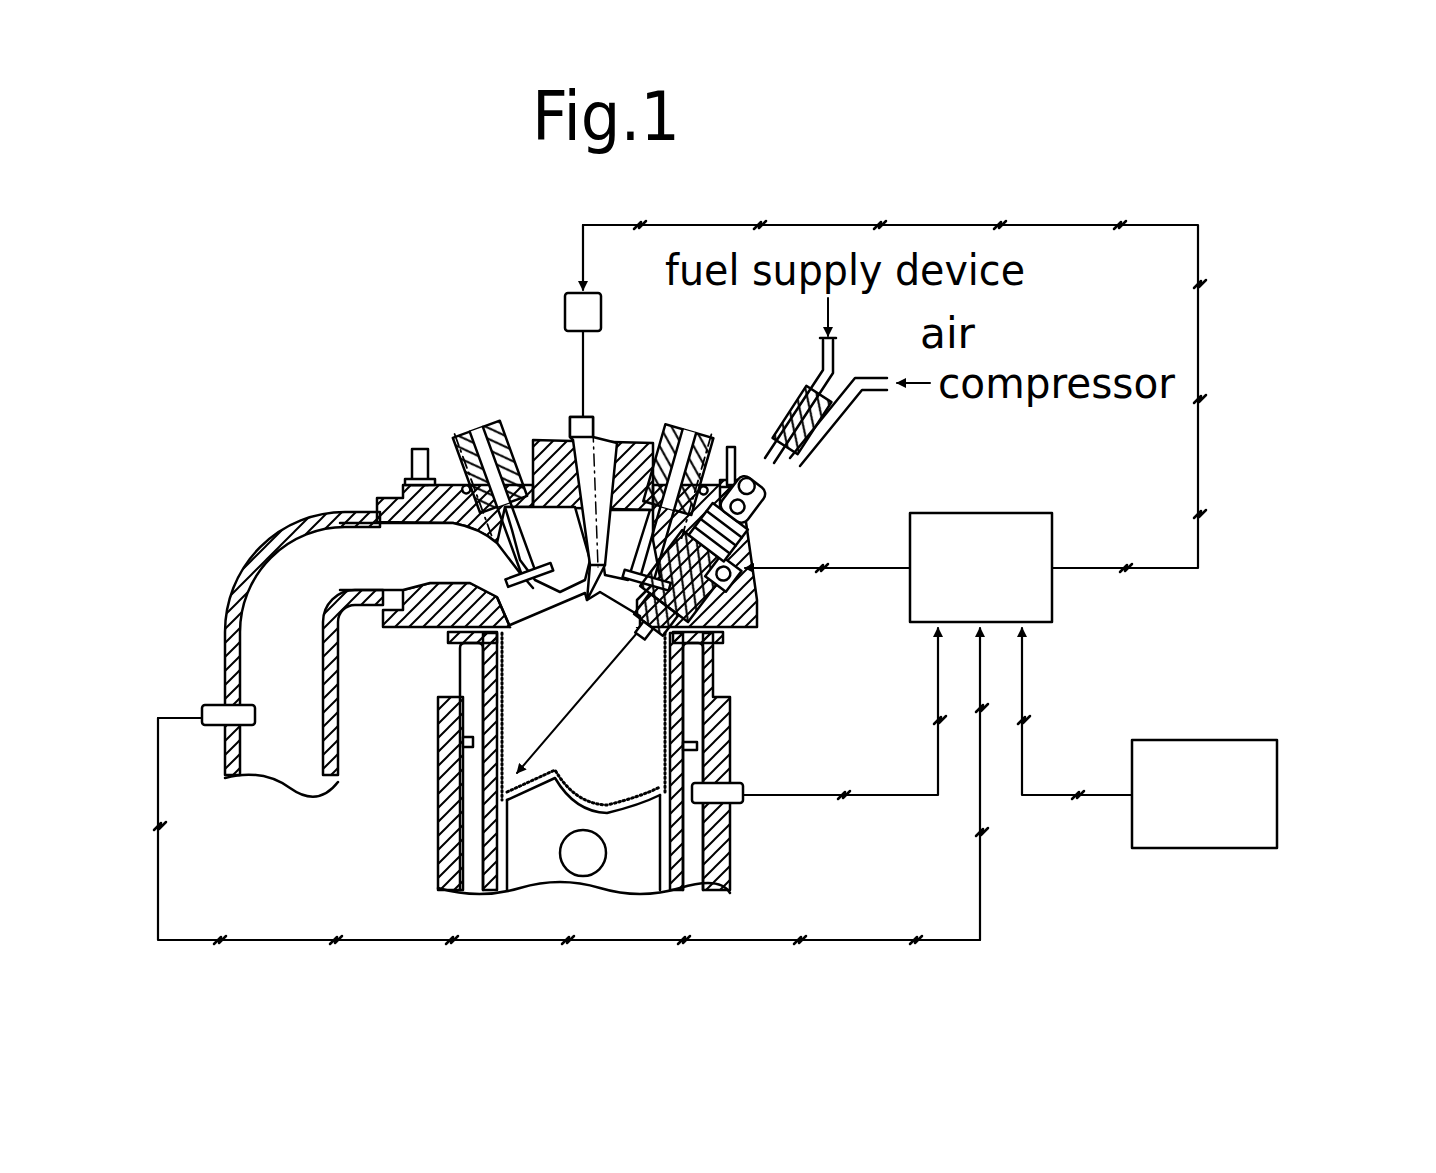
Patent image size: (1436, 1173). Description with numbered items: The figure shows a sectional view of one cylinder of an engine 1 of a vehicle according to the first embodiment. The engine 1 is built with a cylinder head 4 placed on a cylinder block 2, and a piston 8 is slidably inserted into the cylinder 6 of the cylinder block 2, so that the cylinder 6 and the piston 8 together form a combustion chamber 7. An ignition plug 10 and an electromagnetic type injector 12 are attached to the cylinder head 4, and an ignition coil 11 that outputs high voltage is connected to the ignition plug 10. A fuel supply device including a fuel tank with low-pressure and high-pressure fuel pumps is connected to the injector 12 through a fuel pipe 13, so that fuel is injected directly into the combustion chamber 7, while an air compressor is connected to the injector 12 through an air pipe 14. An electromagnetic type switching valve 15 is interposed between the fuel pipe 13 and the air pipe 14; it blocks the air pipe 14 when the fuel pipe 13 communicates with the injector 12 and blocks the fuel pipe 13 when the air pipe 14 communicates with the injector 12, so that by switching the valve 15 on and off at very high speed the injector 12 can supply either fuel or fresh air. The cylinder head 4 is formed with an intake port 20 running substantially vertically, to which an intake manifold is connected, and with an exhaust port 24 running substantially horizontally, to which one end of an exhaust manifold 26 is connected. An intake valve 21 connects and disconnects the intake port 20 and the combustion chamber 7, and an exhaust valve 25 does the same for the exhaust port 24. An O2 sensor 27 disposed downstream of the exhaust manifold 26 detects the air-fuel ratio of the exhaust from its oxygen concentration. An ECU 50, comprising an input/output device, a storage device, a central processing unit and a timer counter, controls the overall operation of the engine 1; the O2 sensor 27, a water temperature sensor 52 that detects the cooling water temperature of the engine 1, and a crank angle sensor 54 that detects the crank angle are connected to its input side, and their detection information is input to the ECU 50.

The engine 1 is at (414, 420).
The cylinder block 2 is at (438, 852).
The cylinder head 4 is at (406, 487).
The cylinder 6 is at (490, 683).
The combustion chamber 7 is at (623, 729).
The piston 8 is at (640, 862).
The ignition plug 10 is at (576, 420).
The ignition coil 11 is at (565, 307).
The electromagnetic type injector 12 is at (765, 520).
The fuel pipe 13 is at (820, 366).
The air pipe 14 is at (850, 418).
The electromagnetic type switching valve 15 is at (822, 452).
The intake port 20 is at (605, 440).
The intake valve 21 is at (692, 437).
The exhaust port 24 is at (476, 568).
The exhaust valve 25 is at (482, 434).
The exhaust manifold 26 is at (237, 578).
The O2 sensor 27 is at (213, 708).
The ECU 50 is at (1030, 513).
The water temperature sensor 52 is at (740, 788).
The crank angle sensor 54 is at (1248, 740).